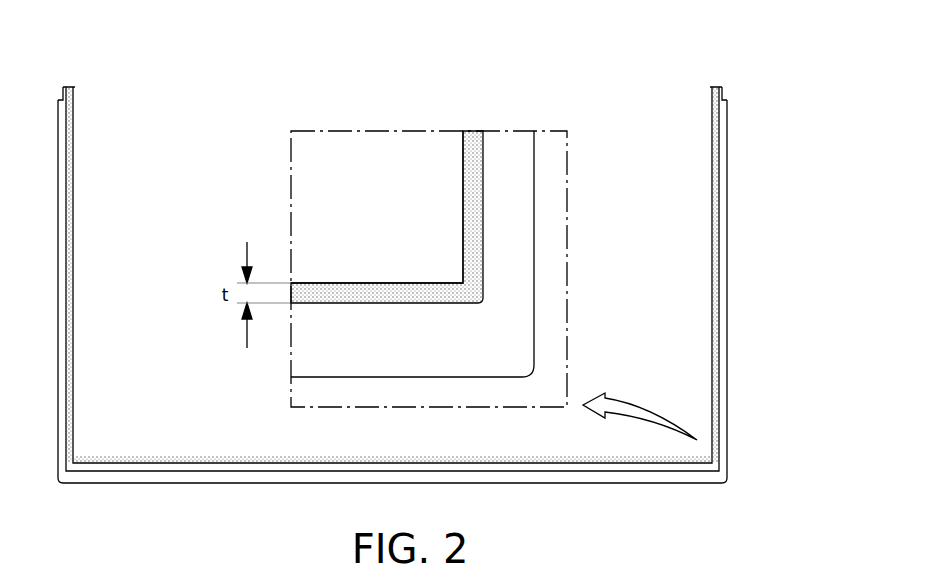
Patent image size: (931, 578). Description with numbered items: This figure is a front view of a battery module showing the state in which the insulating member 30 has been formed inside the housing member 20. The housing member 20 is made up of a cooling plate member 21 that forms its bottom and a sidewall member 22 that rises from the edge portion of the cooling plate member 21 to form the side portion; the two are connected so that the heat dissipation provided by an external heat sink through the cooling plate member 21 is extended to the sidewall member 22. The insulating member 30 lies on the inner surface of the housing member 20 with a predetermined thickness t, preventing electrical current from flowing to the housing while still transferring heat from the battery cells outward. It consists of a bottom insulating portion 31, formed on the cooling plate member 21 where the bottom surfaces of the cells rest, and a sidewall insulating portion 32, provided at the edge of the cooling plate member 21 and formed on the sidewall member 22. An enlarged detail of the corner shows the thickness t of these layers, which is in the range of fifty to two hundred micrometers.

The housing member 20 is at (800, 405).
The cooling plate member 21 is at (403, 352).
The sidewall member 22 is at (517, 211).
The insulating member 30 is at (290, 66).
The bottom insulating portion 31 is at (327, 292).
The sidewall insulating portion 32 is at (472, 202).